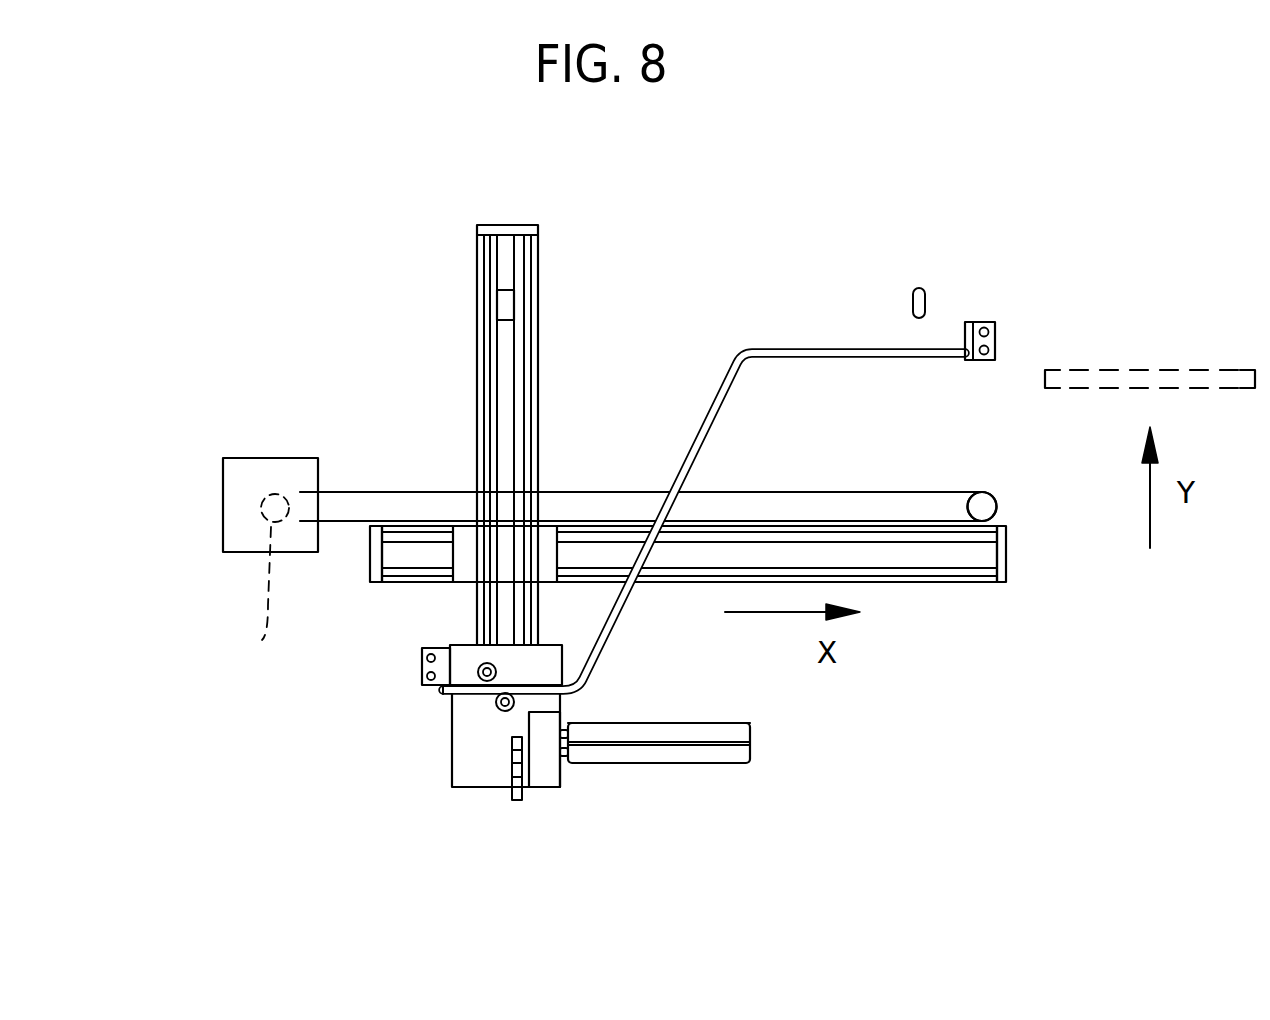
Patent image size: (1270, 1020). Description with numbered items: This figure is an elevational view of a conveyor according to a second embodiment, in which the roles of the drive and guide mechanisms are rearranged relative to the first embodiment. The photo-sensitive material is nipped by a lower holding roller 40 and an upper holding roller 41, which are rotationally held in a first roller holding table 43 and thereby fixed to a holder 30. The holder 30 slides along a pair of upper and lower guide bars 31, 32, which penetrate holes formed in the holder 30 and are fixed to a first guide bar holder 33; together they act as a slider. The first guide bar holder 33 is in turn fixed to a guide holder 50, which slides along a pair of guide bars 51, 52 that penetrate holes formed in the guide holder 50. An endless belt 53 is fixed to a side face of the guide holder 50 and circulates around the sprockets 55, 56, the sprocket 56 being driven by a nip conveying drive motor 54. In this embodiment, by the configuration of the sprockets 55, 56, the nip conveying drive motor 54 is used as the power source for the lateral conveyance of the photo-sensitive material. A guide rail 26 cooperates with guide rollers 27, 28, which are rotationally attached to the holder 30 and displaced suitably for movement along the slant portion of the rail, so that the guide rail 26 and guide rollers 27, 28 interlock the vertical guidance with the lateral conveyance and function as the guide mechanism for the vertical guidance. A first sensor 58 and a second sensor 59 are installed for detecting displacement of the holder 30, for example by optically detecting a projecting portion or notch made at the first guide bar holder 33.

The guide rail 26 is at (708, 300).
The guide roller 27 is at (495, 705).
The guide roller 28 is at (482, 665).
The holder 30 is at (480, 760).
The upper guide bar 31 is at (900, 542).
The lower guide bar 32 is at (975, 576).
The first guide bar holder 33 is at (893, 582).
The lower holding roller 40 is at (703, 763).
The upper holding roller 41 is at (683, 723).
The first roller holding table 43 is at (545, 762).
The guide holder 50 is at (467, 540).
The guide bar 51 is at (498, 267).
The guide bar 52 is at (527, 317).
The endless belt 53 is at (830, 487).
The nip conveying drive motor 54 is at (290, 478).
The upper sprocket 55 is at (996, 507).
The lower sprocket 56 is at (237, 593).
The first sensor 58 is at (923, 292).
The second sensor 59 is at (498, 302).